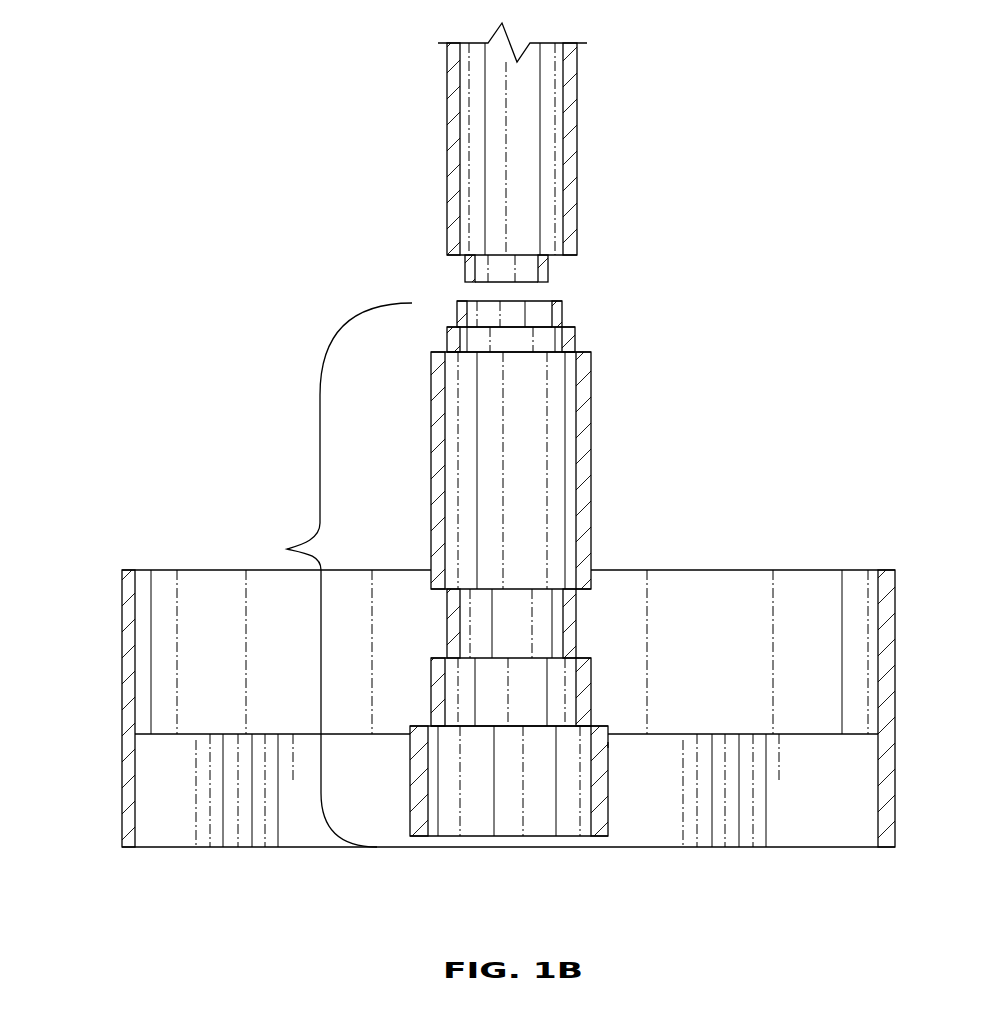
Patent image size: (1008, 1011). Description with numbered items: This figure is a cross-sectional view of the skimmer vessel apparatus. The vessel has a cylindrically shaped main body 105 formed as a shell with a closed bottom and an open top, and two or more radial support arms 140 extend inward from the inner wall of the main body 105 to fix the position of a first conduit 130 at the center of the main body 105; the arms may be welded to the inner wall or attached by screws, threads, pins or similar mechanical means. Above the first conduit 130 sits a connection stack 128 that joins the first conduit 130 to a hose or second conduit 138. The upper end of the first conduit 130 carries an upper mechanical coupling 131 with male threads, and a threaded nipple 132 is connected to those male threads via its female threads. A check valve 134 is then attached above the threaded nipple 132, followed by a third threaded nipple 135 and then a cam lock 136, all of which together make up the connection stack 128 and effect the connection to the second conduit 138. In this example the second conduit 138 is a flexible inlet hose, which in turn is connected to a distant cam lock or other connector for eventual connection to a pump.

The main body 105 is at (121, 672).
The connection stack 128 is at (329, 575).
The first conduit 130 is at (608, 775).
The upper mechanical coupling 131 is at (618, 745).
The threaded nipple 132 is at (431, 673).
The check valve 134 is at (591, 468).
The third threaded nipple 135 is at (575, 330).
The cam lock 136 is at (562, 301).
The second conduit 138 is at (572, 177).
The support arms 140 is at (203, 750).